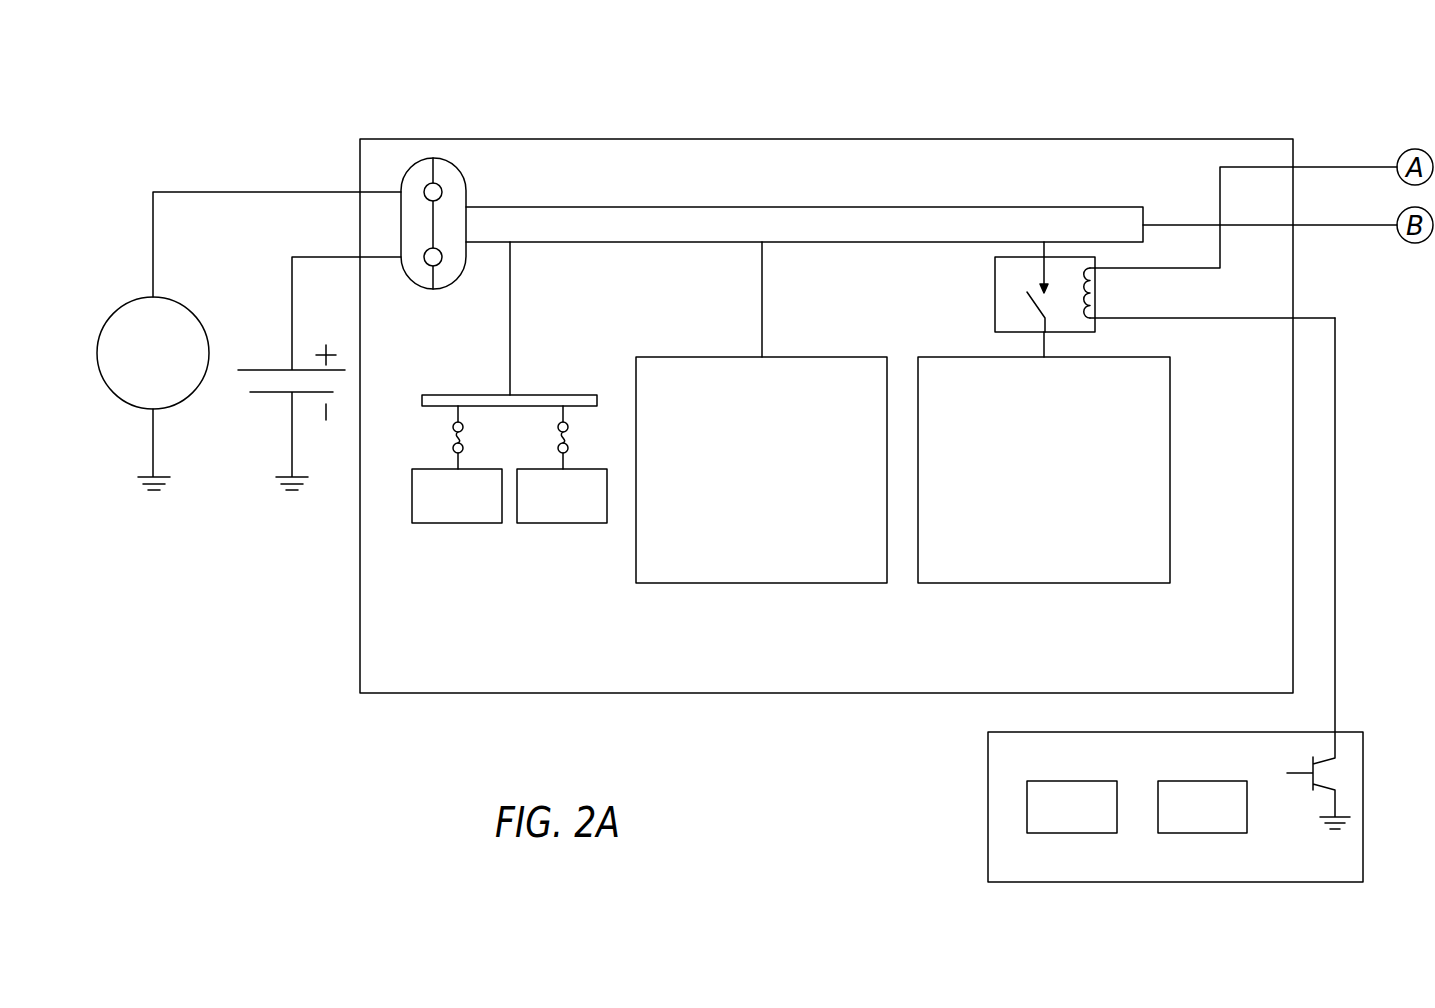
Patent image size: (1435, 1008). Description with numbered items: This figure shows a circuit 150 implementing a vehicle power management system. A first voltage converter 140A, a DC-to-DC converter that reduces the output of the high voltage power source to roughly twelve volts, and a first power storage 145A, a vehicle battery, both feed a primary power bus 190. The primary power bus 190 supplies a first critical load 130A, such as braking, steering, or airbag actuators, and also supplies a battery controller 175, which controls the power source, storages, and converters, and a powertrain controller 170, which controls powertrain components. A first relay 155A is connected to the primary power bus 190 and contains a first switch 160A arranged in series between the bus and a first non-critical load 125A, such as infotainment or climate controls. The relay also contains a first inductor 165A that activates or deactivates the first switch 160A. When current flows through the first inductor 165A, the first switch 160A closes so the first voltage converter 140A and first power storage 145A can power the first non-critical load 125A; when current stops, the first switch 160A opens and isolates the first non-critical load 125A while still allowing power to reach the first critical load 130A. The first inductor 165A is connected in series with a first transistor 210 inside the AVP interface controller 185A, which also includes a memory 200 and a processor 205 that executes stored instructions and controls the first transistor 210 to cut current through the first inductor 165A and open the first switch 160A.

The circuit 150 is at (1272, 46).
The primary power bus 190 is at (875, 206).
The first voltage converter 140A is at (177, 298).
The first power storage 145A is at (261, 410).
The battery controller 175 is at (457, 464).
The powertrain controller 170 is at (562, 464).
The first critical load 130A is at (673, 585).
The first non-critical load 125A is at (957, 585).
The first relay 155A is at (994, 280).
The first switch 160A is at (1026, 317).
The first inductor 165A is at (1083, 268).
The AVP interface controller 185A is at (987, 760).
The memory 200 is at (1072, 807).
The processor 205 is at (1202, 807).
The first transistor 210 is at (1332, 775).